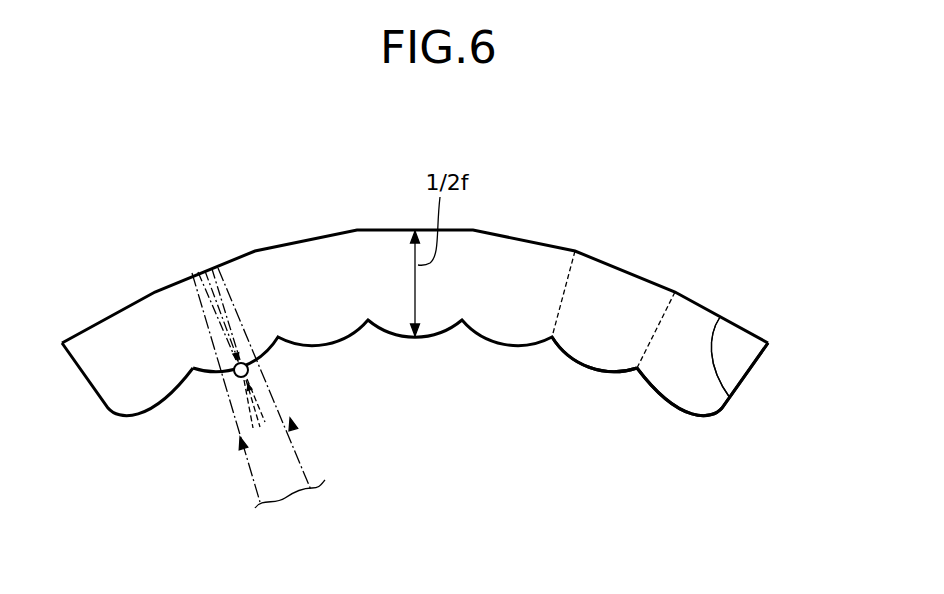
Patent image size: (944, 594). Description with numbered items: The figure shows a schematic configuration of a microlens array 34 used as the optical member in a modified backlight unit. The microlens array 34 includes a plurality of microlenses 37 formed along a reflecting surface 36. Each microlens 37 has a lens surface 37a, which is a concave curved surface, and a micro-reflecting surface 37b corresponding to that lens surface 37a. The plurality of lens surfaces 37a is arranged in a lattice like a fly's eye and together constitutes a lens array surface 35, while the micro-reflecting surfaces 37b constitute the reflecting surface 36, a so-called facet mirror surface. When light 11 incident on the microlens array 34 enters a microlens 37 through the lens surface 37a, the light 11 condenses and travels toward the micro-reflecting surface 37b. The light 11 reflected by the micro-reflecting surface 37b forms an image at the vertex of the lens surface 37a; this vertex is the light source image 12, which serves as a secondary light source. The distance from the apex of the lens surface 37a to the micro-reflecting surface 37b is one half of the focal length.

The light 11 is at (250, 466).
The light source image 12 is at (249, 371).
The microlens array 34 is at (645, 193).
The lens array surface 35 is at (578, 392).
The reflecting surface 36 is at (612, 277).
The microlens 37 is at (738, 362).
The lens surface 37a is at (667, 410).
The micro-reflecting surface 37b is at (730, 398).